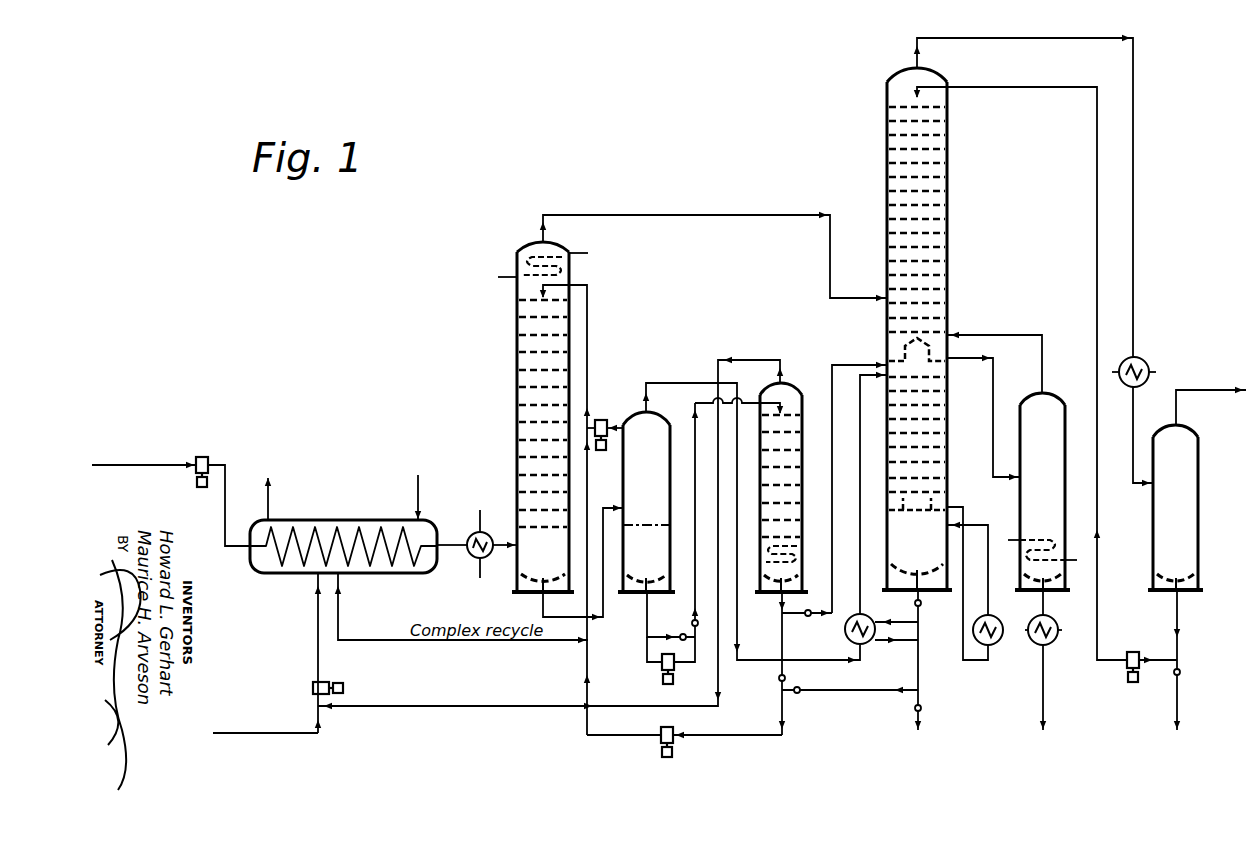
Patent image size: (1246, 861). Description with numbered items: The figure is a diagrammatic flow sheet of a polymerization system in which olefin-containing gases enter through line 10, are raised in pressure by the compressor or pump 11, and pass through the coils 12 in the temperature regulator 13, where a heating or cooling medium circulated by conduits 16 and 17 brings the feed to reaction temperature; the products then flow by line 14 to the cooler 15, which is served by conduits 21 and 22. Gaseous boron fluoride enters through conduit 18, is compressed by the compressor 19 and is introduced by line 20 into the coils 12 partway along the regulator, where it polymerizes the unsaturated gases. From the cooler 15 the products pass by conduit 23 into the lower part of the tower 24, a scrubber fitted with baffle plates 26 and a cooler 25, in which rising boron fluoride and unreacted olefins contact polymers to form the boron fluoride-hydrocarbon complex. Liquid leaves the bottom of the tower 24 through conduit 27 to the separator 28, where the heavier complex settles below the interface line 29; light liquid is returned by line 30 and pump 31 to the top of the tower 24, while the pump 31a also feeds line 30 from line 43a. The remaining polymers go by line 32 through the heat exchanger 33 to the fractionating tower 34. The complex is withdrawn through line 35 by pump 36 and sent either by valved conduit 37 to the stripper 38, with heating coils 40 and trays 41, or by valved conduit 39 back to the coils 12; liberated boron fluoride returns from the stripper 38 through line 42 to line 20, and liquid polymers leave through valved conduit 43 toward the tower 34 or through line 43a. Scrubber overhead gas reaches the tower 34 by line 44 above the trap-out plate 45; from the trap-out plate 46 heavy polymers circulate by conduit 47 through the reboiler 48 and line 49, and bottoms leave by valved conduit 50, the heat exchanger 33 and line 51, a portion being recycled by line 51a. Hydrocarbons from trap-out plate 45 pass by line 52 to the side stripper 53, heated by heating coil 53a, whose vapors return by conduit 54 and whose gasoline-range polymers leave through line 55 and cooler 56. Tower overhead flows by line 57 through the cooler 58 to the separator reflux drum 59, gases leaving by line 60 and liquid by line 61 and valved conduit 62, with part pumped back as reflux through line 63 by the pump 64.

The line 10 is at (180, 470).
The compressor or pump 11 is at (209, 459).
The coils 12 is at (289, 530).
The temperature regulator 13 is at (347, 521).
The line 14 is at (442, 548).
The cooler 15 is at (470, 535).
The conduit 16 is at (419, 492).
The conduit 17 is at (270, 493).
The conduit 18 is at (282, 734).
The compressor 19 is at (349, 689).
The line 20 is at (316, 657).
The conduit 21 is at (482, 516).
The conduit 22 is at (478, 572).
The conduit 23 is at (495, 552).
The tower 24 is at (515, 253).
The cooler 25 is at (578, 257).
The baffle plates 26 is at (515, 349).
The conduit 27 is at (597, 603).
The separator 28 is at (631, 413).
The line 29 is at (657, 523).
The line 30 is at (590, 358).
The pump 31 is at (605, 451).
The pump 31a is at (660, 740).
The line 32 is at (681, 382).
The heat exchanger 33 is at (881, 508).
The fractionating tower 34 is at (885, 118).
The line 35 is at (645, 657).
The pump 36 is at (675, 672).
The valved conduit 37 is at (697, 553).
The stripper 38 is at (791, 382).
The valved conduit 39 is at (648, 632).
The heating coils 40 is at (798, 553).
The trays 41 is at (796, 463).
The line 42 is at (760, 358).
The valved conduit 43 is at (808, 616).
The line 43a is at (781, 658).
The line 44 is at (749, 214).
The trap-out plate 45 is at (928, 348).
The trap-out plate 46 is at (931, 506).
The conduit 47 is at (968, 511).
The reboiler 48 is at (994, 645).
The line 49 is at (977, 600).
The valved conduit 50 is at (921, 624).
The line 51 is at (922, 695).
The line 51a is at (830, 692).
The line 52 is at (995, 404).
The side stripper 53 is at (1061, 481).
The heating coil 53a is at (1078, 565).
The conduit 54 is at (1040, 336).
The line 55 is at (1046, 606).
The cooler 56 is at (1054, 645).
The line 57 is at (1040, 38).
The cooler 58 is at (1146, 363).
The separator reflux drum 59 is at (1199, 458).
The line 60 is at (1211, 395).
The line 61 is at (1181, 622).
The valved conduit 62 is at (1181, 697).
The line 63 is at (1099, 611).
The pump 64 is at (1134, 652).